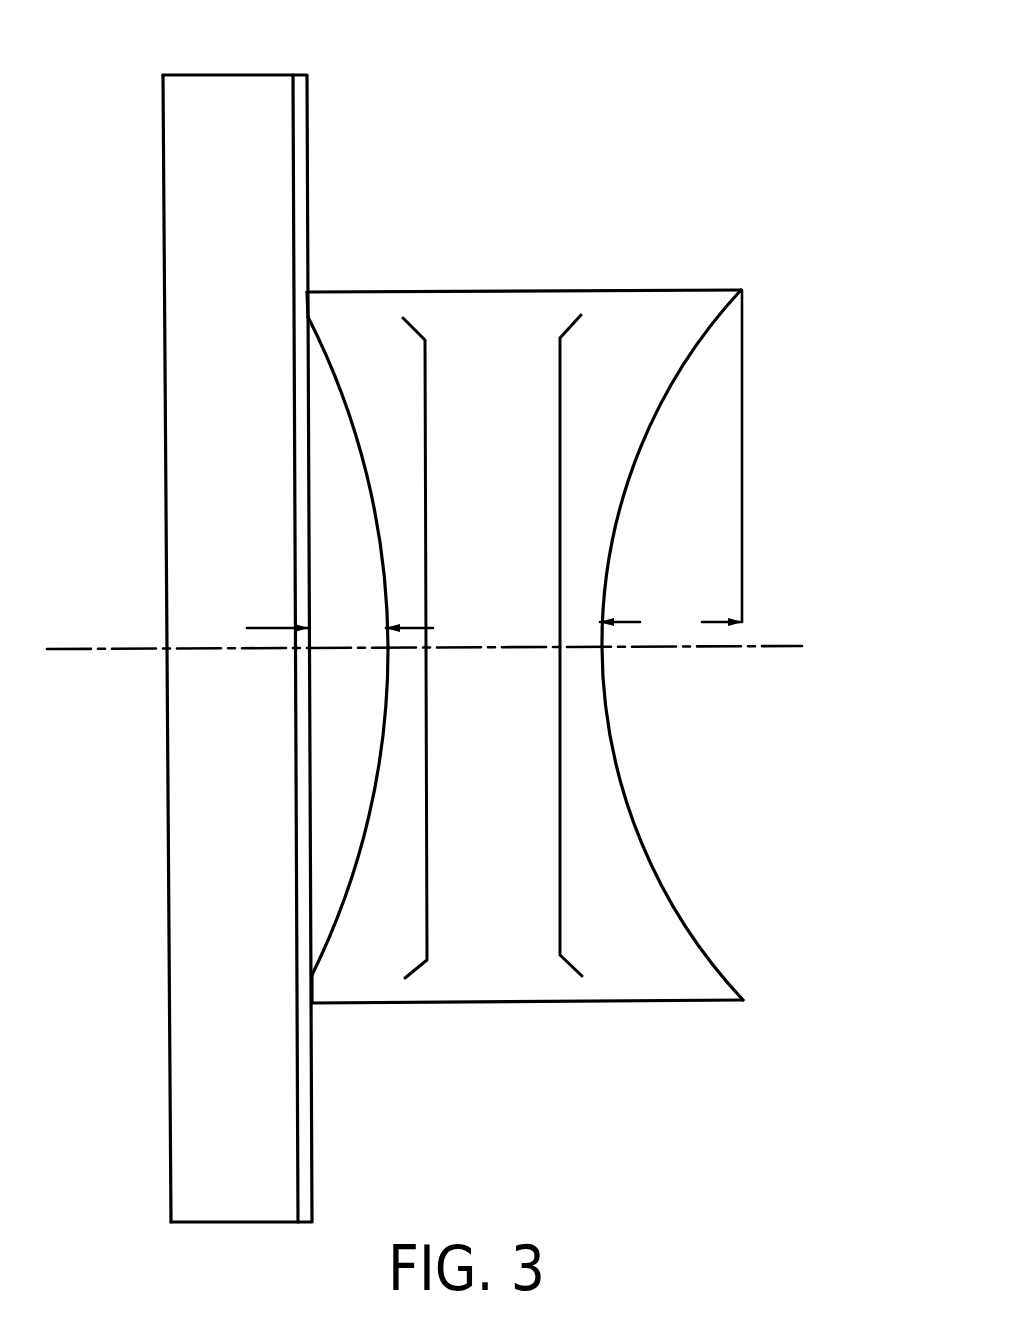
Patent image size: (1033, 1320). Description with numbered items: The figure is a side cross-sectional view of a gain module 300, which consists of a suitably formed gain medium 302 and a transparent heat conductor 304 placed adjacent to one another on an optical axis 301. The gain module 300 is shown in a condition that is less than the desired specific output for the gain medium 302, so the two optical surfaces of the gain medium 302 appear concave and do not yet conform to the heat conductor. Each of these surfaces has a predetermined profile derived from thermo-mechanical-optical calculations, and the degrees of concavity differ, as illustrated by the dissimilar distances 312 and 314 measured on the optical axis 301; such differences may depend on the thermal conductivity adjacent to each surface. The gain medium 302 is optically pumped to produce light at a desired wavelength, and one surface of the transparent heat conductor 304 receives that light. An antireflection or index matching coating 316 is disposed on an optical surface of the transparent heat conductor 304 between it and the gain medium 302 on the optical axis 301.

The gain module 300 is at (673, 140).
The optical axis 301 is at (128, 649).
The gain medium 302 is at (480, 996).
The transparent heat conductor 304 is at (173, 212).
The first distance 312 is at (340, 628).
The second distance 314 is at (671, 468).
The antireflection or index matching coating 316 is at (308, 351).